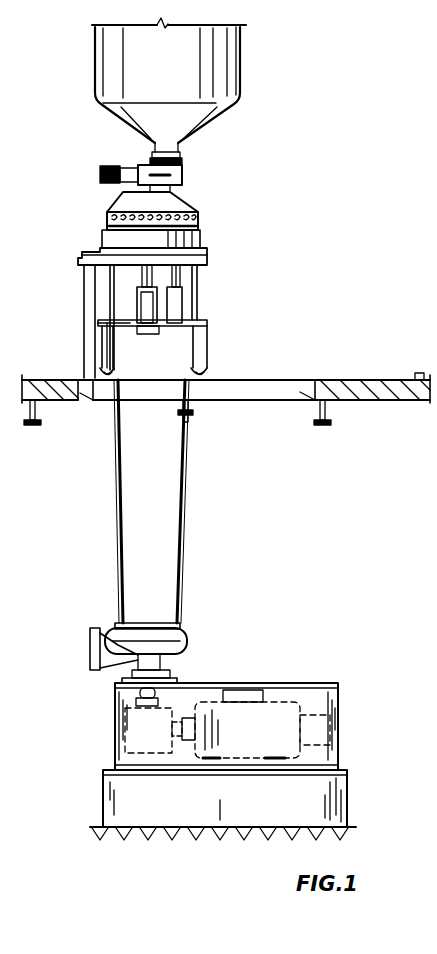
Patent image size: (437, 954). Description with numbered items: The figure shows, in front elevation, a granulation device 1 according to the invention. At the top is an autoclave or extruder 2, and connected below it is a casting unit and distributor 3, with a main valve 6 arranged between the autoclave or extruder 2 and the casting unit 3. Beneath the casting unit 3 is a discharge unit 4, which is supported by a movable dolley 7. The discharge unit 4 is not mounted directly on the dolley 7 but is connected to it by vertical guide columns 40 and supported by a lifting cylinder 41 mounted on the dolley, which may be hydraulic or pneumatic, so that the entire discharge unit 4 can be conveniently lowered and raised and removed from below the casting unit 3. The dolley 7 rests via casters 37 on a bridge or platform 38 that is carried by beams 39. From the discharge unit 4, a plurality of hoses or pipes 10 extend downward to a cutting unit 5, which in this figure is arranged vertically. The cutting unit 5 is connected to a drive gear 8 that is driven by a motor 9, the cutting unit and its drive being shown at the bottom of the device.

The granulation device 1 is at (252, 130).
The autoclave or extruder 2 is at (246, 72).
The casting unit and distributor 3 is at (202, 212).
The discharge unit 4 is at (100, 251).
The cutting unit 5 is at (190, 640).
The main valve 6 is at (184, 177).
The dolley 7 is at (211, 340).
The drive gear 8 is at (160, 753).
The motor 9 is at (283, 700).
The hoses or pipes 10 is at (177, 563).
The casters 37 is at (116, 373).
The bridge or platform 38 is at (284, 380).
The beams 39 is at (328, 415).
The vertical guide columns 40 is at (160, 311).
The lifting cylinder 41 is at (178, 290).